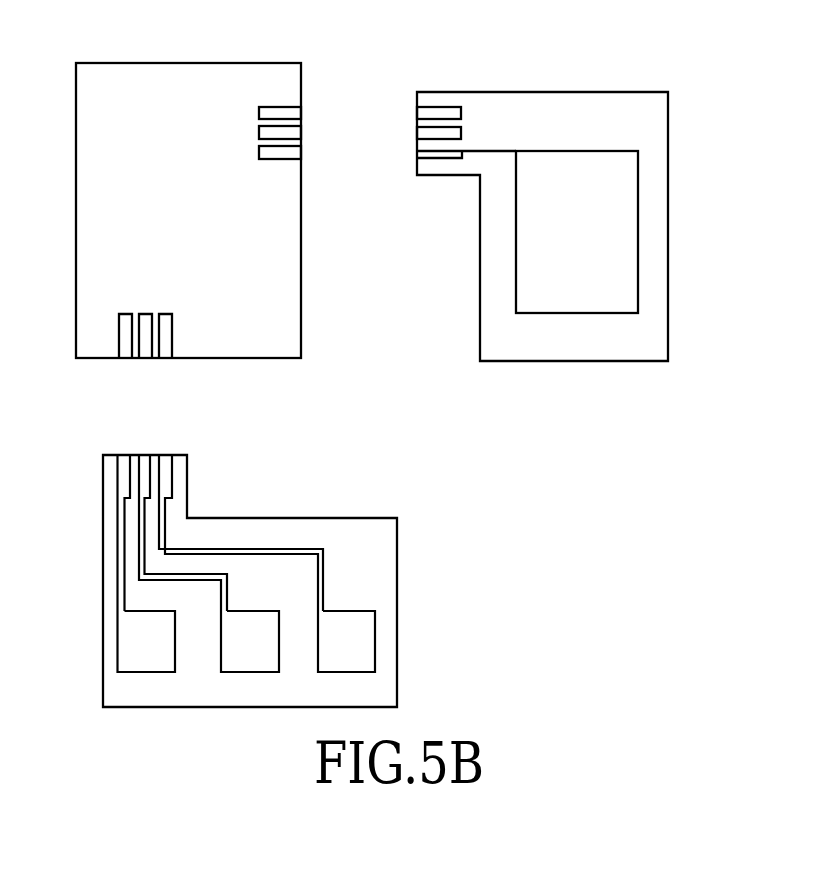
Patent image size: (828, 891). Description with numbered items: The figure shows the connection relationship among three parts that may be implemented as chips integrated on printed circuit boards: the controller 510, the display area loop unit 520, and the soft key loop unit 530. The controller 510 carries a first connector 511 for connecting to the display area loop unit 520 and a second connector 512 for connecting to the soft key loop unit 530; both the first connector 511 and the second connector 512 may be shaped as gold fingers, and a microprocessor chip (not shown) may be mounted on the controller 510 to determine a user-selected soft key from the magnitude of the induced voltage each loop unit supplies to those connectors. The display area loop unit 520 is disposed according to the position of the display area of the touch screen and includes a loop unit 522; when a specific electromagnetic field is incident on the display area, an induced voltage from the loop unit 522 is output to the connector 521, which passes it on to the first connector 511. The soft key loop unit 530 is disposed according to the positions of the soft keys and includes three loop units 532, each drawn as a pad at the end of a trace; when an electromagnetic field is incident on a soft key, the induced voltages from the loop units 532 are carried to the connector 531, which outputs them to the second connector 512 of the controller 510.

The controller 510 is at (187, 63).
The first connector 511 is at (259, 132).
The second connector 512 is at (172, 333).
The display area loop unit 520 is at (540, 92).
The connector 521 is at (461, 132).
The loop unit 522 is at (600, 150).
The soft key loop unit 530 is at (289, 518).
The connector 531 is at (143, 455).
The loop units 532 is at (354, 612).